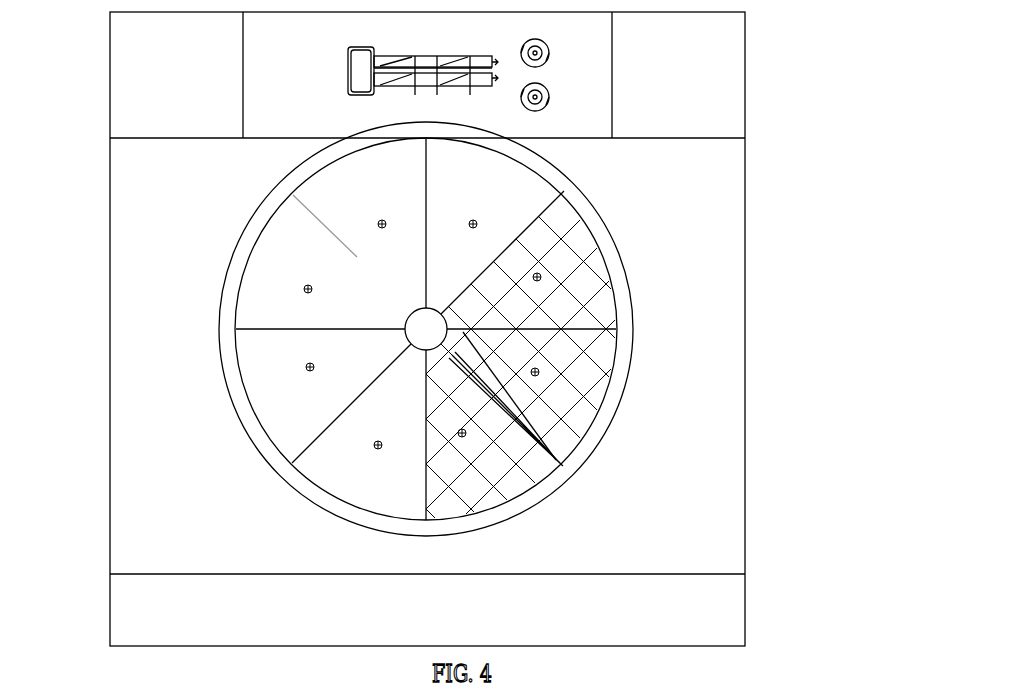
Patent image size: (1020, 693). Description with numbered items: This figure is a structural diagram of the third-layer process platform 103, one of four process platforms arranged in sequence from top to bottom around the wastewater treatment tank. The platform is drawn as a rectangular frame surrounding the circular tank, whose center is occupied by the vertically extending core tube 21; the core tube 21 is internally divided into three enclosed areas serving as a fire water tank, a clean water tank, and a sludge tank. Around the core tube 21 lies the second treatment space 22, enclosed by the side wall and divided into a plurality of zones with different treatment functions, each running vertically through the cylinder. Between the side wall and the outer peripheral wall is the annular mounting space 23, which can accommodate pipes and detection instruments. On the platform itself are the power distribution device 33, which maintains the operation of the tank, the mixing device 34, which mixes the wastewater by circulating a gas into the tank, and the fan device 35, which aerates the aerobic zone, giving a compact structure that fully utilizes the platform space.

The third-layer process platform 103 is at (703, 311).
The core tube 21 is at (415, 333).
The second treatment space 22 is at (278, 306).
The mounting space 23 is at (258, 220).
The power distribution device 33 is at (730, 605).
The mixing device 34 is at (350, 68).
The fan device 35 is at (549, 53).